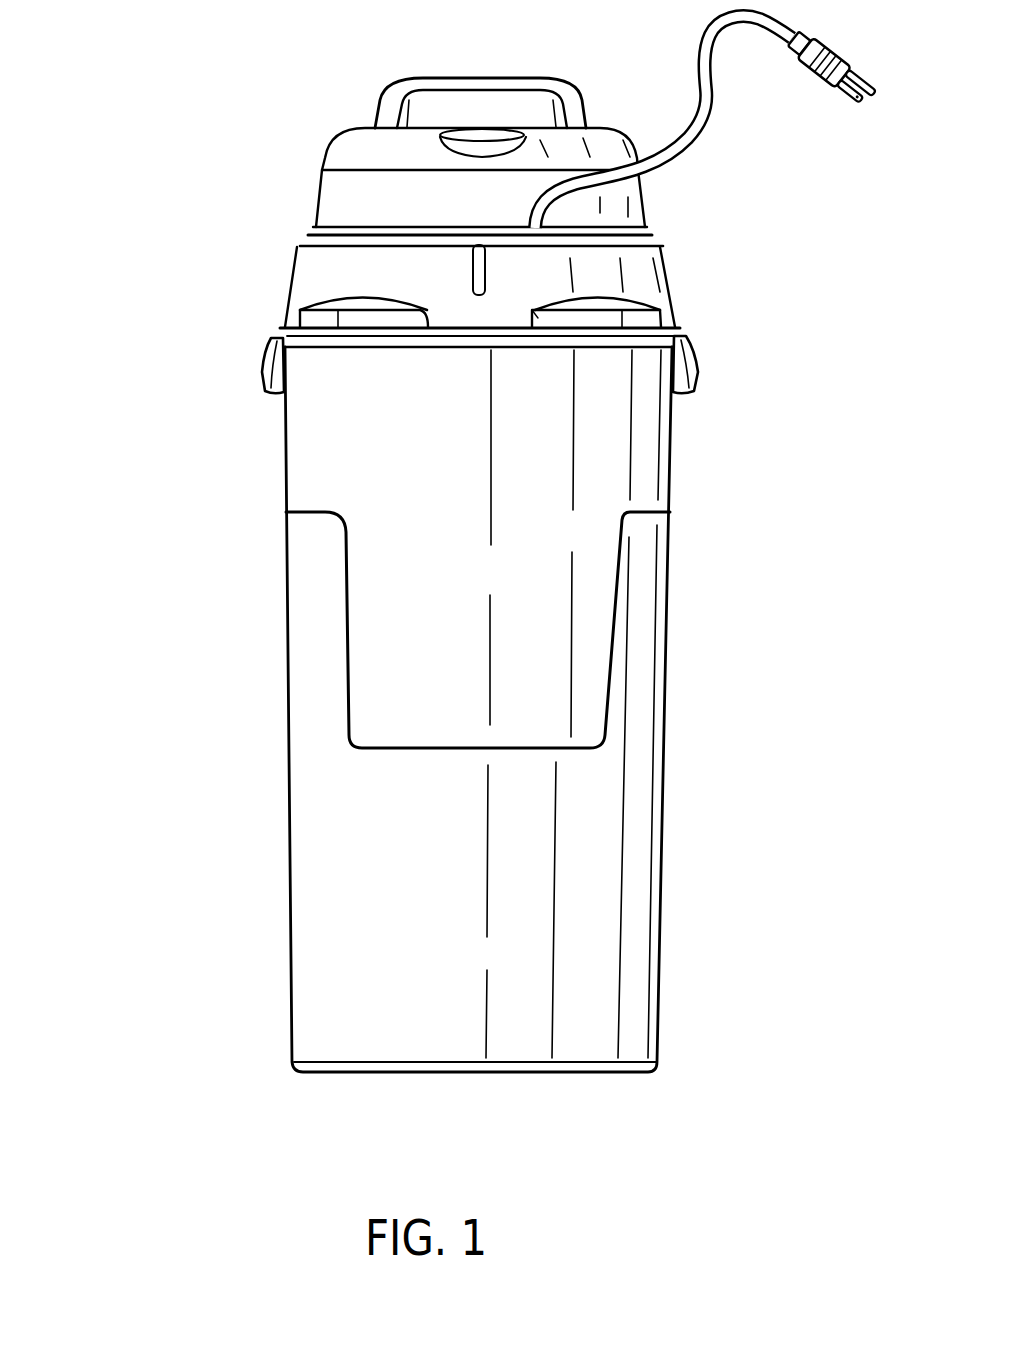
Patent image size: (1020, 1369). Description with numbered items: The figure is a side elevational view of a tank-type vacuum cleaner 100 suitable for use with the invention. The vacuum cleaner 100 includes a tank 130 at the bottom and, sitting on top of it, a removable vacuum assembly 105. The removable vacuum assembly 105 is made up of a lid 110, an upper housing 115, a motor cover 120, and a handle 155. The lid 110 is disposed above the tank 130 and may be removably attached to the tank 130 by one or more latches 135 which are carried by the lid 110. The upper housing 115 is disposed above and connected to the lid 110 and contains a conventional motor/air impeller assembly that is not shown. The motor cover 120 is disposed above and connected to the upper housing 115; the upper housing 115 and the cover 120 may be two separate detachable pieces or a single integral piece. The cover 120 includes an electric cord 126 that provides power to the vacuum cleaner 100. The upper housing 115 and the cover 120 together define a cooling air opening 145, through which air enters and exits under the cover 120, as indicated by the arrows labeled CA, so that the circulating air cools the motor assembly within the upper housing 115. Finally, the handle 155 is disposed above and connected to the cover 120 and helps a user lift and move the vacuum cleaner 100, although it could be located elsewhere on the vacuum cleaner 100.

The vacuum cleaner 100 is at (126, 136).
The removable vacuum assembly 105 is at (244, 296).
The lid 110 is at (680, 330).
The upper housing 115 is at (672, 295).
The motor cover 120 is at (320, 172).
The electric cord 126 is at (690, 110).
The tank 130 is at (665, 633).
The latches 135 is at (258, 376).
The cooling air opening 145 is at (310, 232).
The handle 155 is at (398, 89).